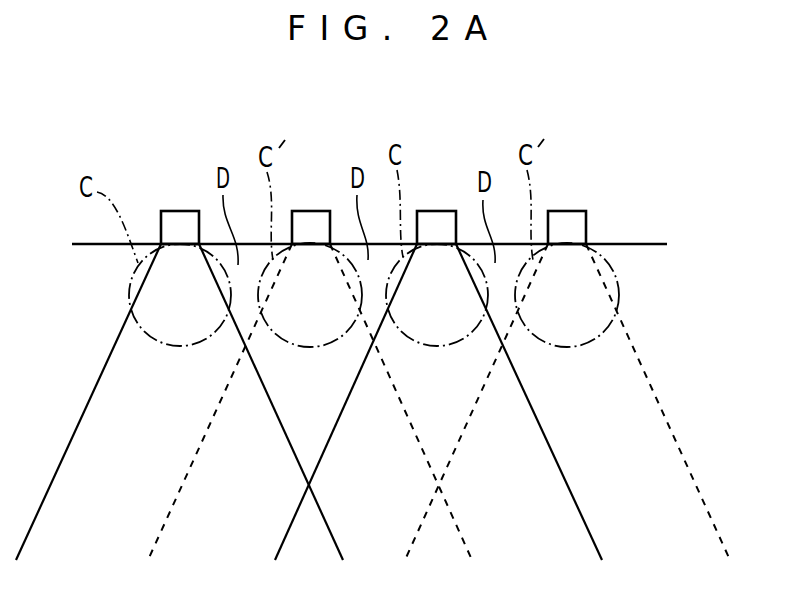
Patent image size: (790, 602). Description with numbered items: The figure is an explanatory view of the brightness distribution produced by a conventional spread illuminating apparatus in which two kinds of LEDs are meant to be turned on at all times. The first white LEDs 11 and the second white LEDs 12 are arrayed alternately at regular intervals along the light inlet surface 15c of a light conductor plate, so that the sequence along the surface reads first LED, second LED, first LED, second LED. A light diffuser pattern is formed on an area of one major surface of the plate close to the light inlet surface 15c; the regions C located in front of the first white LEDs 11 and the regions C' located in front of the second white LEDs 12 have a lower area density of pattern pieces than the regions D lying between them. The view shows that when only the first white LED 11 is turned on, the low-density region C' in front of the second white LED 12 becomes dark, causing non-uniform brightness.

The first white LED 11 is at (177, 218).
The second white LED 12 is at (312, 223).
The light inlet surface 15c is at (642, 243).